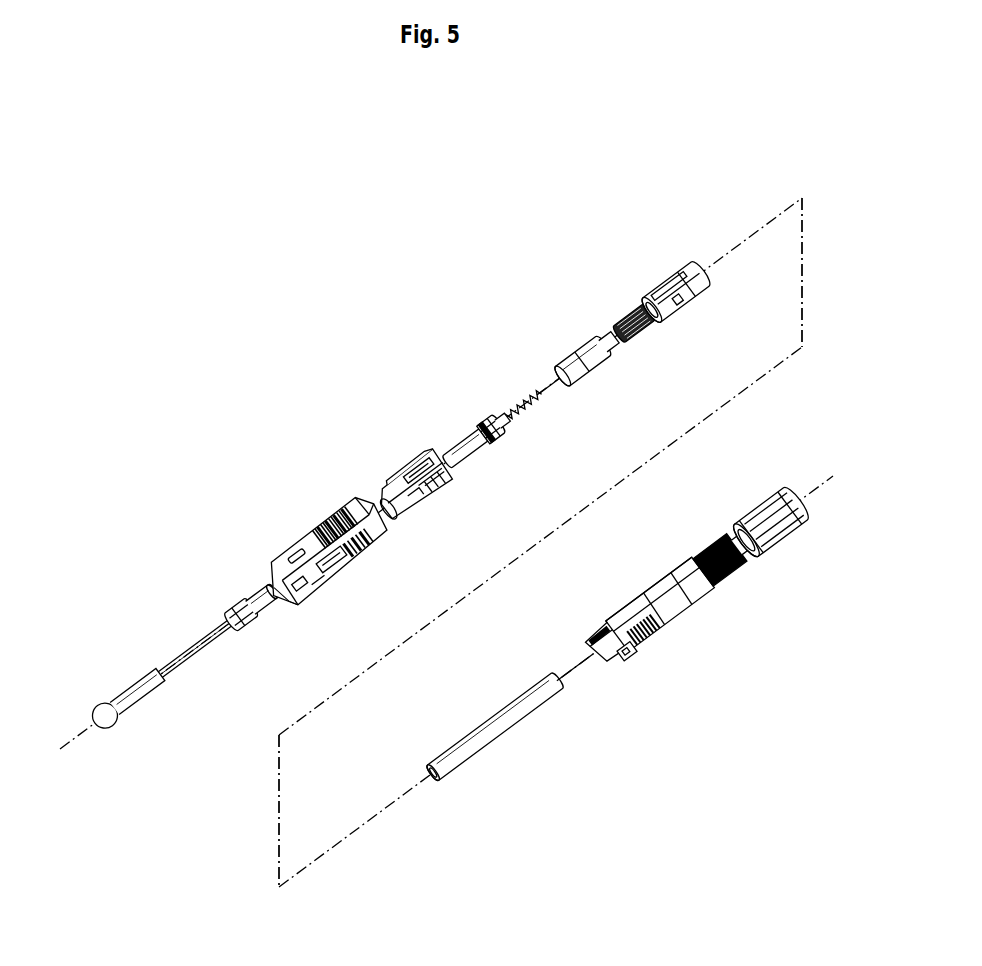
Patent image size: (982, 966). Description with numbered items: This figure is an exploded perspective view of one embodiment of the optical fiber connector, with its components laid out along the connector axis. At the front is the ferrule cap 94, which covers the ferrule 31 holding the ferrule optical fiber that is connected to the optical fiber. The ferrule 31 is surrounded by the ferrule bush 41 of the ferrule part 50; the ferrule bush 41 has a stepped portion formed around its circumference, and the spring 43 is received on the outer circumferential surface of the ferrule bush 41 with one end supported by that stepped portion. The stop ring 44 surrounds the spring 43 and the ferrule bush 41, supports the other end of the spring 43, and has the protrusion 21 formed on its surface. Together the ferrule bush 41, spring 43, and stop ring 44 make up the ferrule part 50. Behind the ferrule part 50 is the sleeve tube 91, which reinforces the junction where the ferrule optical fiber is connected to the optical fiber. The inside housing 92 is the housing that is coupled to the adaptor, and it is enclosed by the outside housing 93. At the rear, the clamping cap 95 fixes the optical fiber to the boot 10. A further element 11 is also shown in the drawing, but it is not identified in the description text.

The boot 10 is at (680, 607).
The button 11 is at (617, 664).
The protrusion 21 is at (706, 272).
The ferrule 31 is at (470, 440).
The ferrule bush 41 is at (580, 350).
The spring 43 is at (628, 315).
The stop ring 44 is at (678, 272).
The ferrule part 50 is at (298, 352).
The sleeve tube 91 is at (487, 744).
The inside housing 92 is at (407, 473).
The outside housing 93 is at (303, 534).
The ferrule cap 94 is at (158, 681).
The clamping cap 95 is at (782, 537).